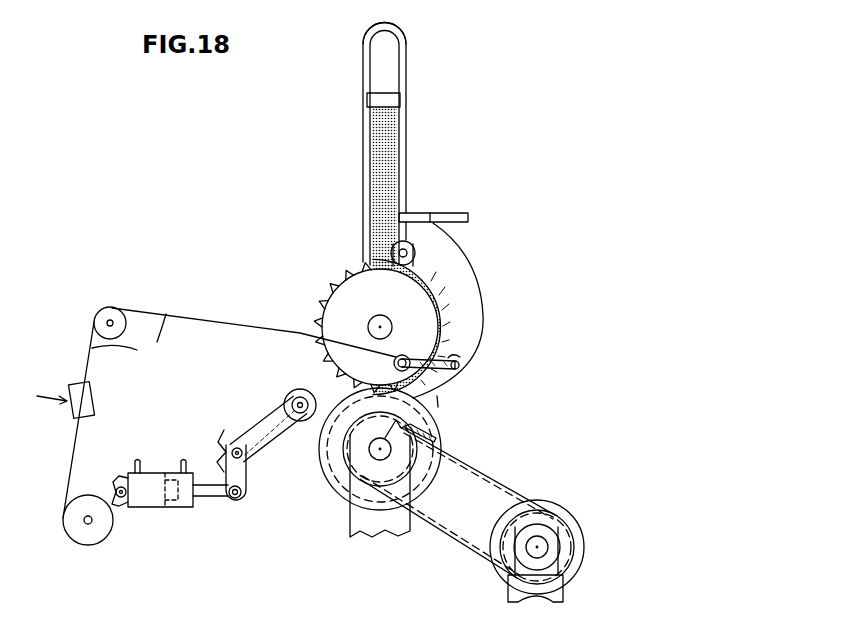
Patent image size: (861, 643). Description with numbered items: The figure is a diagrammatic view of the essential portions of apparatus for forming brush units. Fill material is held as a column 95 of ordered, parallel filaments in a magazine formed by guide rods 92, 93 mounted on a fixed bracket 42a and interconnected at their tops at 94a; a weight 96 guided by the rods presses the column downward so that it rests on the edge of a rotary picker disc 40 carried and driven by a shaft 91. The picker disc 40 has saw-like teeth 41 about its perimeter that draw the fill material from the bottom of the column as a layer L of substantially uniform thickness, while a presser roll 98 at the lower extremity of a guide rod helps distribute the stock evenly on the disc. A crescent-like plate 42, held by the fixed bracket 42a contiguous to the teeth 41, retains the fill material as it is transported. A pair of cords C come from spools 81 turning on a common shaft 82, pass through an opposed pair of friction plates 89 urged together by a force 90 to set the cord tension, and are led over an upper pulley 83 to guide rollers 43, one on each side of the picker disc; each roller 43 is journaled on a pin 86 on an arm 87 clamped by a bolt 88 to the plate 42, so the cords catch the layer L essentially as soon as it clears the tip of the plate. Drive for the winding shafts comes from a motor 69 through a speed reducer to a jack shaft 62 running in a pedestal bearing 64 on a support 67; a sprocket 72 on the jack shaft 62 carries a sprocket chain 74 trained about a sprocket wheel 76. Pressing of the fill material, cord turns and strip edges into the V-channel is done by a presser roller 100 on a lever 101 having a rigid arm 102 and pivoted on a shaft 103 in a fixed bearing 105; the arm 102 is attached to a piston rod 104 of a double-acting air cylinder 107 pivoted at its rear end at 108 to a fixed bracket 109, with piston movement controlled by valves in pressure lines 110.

The picker disc 40 is at (333, 293).
The teeth 41 is at (312, 327).
The crescent-like plate 42 is at (483, 297).
The fixed bracket 42a is at (477, 221).
The guide rollers 43 is at (393, 362).
The jack shaft 62 is at (528, 541).
The pedestal bearing 64 is at (553, 567).
The support 67 is at (563, 597).
The motor 69 is at (584, 538).
The sprocket 72 is at (565, 525).
The sprocket chain 74 is at (481, 467).
The sprocket wheel 76 is at (438, 422).
The spool 81 is at (66, 537).
The common shaft 82 is at (90, 525).
The upper pulley 83 is at (113, 308).
The pin 86 is at (406, 354).
The arm 87 is at (452, 355).
The bolt 88 is at (460, 365).
The friction plates 89 is at (84, 383).
The force 90 is at (52, 398).
The shaft 91 is at (380, 315).
The guide rod 92 is at (363, 67).
The guide rod 93 is at (402, 62).
The interconnection 94a is at (387, 27).
The column 95 is at (393, 153).
The weight 96 is at (400, 100).
The presser roll 98 is at (416, 254).
The presser roller 100 is at (300, 389).
The lever 101 is at (268, 414).
The rigid arm 102 is at (246, 477).
The shaft 103 is at (237, 446).
The piston rod 104 is at (225, 498).
The fixed bearing 105 is at (222, 438).
The double-acting air cylinder 107 is at (140, 507).
The pivot 108 is at (116, 492).
The fixed bracket 109 is at (113, 481).
The pressure lines 110 is at (180, 465).
The cords C is at (229, 413).
The layer L is at (443, 405).